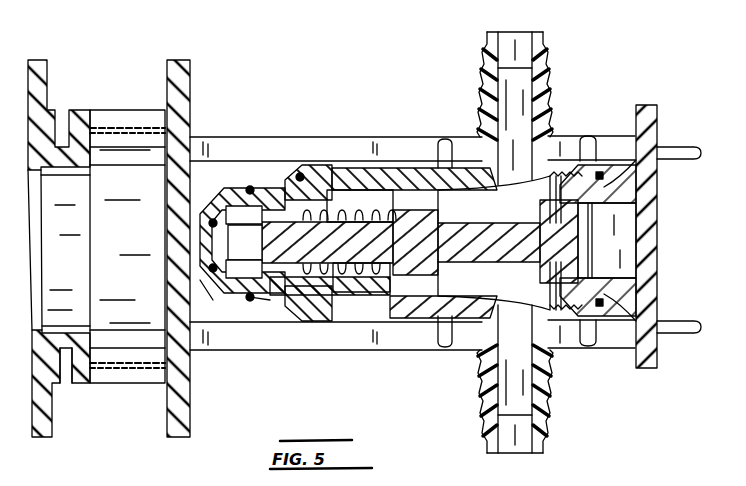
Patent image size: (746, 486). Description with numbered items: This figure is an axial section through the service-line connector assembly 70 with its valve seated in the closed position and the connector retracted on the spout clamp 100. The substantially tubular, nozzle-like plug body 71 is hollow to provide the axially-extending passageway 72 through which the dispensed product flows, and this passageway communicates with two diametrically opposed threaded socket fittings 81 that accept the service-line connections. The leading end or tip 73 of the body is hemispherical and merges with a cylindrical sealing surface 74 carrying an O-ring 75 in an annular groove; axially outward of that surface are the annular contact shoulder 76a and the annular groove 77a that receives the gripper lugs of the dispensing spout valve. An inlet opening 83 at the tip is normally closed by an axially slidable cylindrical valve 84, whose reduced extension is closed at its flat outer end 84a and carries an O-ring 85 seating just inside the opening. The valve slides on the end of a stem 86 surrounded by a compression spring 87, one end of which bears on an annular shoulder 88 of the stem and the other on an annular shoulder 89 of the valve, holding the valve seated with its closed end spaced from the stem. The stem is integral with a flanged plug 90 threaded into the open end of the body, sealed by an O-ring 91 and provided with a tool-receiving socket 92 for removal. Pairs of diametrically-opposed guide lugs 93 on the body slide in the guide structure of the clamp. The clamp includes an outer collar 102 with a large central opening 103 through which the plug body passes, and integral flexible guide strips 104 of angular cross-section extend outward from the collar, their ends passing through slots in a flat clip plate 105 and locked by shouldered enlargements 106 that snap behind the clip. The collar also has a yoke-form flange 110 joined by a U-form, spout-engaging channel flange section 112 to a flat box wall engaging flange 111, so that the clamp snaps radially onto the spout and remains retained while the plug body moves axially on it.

The service-line connector assembly 70 is at (412, 121).
The plug body 71 is at (352, 315).
The passageway 72 is at (475, 280).
The tip 73 is at (227, 198).
The cylindrical sealing surface 74 is at (280, 286).
The O-ring 75 is at (255, 300).
The annular contact shoulder 76a is at (301, 173).
The annular groove 77a is at (338, 168).
The threaded socket fittings 81 is at (523, 62).
The inlet opening 83 is at (203, 282).
The cylindrical valve 84 is at (240, 214).
The flat outer end 84a is at (203, 252).
The O-ring 85 is at (218, 300).
The stem 86 is at (430, 265).
The compression spring 87 is at (363, 222).
The annular shoulder 88 is at (395, 277).
The annular shoulder 89 is at (303, 312).
The flanged plug 90 is at (628, 194).
The O-ring 91 is at (598, 310).
The tool-receiving socket 92 is at (611, 250).
The guide lugs 93 is at (444, 140).
The spout clamp 100 is at (85, 104).
The collar 102 is at (180, 428).
The central opening 103 is at (165, 217).
The guide strips 104 is at (275, 150).
The clip plate 105 is at (645, 118).
The shouldered enlargements 106 is at (665, 153).
The flange 110 is at (130, 150).
The box wall engaging flange 111 is at (38, 64).
The channel flange section 112 is at (62, 355).